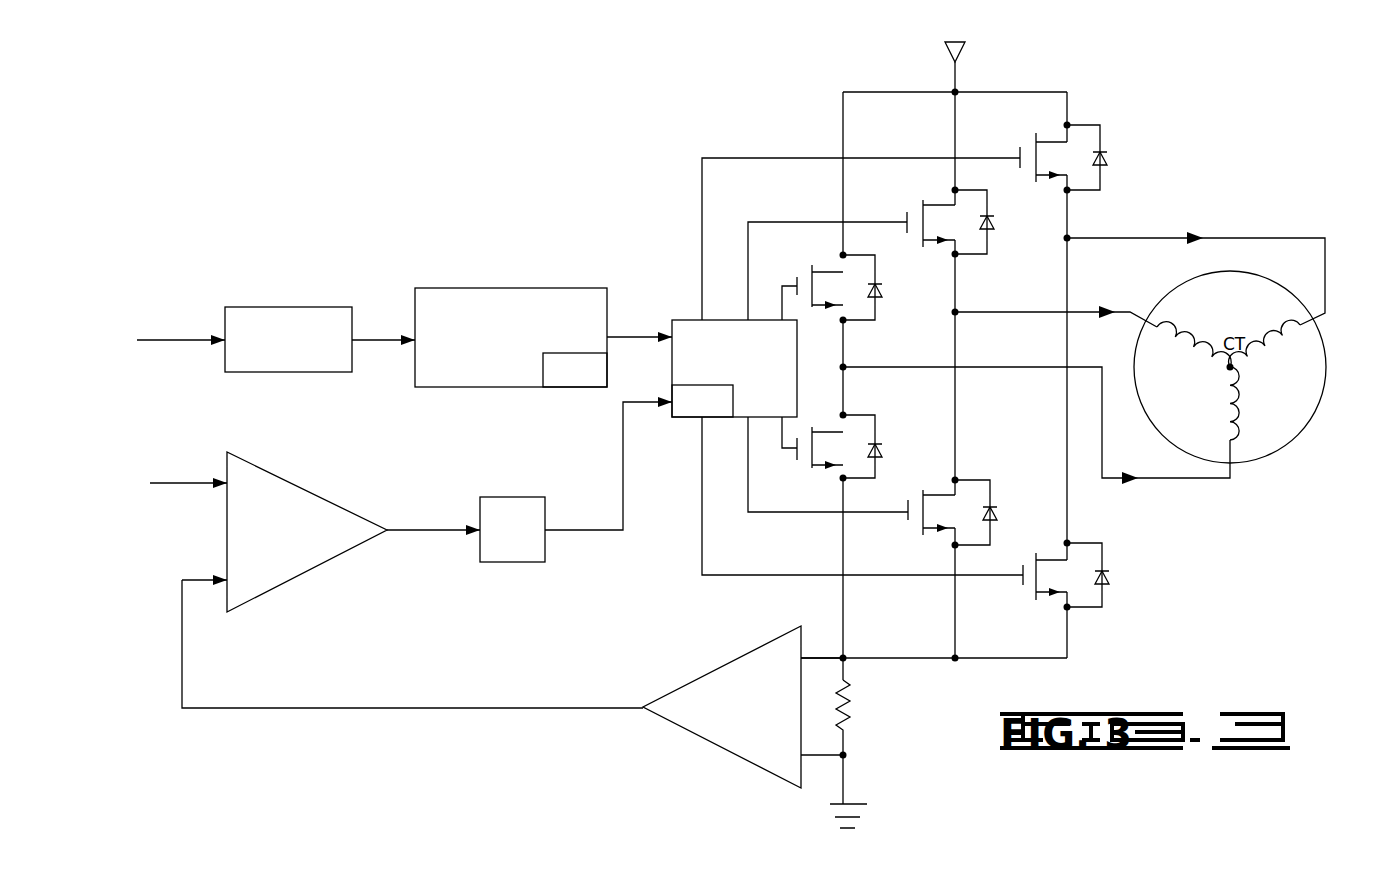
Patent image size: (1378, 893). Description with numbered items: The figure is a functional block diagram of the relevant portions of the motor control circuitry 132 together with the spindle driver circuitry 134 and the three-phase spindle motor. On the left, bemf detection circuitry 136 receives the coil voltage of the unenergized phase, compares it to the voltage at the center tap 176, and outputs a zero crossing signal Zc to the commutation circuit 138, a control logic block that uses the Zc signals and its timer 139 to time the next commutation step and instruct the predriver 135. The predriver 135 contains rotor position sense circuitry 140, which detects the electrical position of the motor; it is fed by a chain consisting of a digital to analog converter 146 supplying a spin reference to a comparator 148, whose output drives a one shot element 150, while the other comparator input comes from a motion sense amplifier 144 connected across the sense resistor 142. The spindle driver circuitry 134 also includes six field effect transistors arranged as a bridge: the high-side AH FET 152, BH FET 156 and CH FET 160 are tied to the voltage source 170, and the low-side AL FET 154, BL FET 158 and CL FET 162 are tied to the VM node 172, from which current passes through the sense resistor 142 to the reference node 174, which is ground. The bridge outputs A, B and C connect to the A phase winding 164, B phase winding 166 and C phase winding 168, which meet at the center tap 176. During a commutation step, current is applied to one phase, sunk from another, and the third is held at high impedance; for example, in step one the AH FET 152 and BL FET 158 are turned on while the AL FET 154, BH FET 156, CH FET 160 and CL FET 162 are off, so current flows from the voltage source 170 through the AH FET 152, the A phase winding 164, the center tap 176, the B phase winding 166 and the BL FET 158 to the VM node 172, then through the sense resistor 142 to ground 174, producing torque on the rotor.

The motor control circuitry 132 is at (383, 222).
The spindle driver circuitry 134 is at (762, 122).
The predriver 135 is at (685, 320).
The bemf detection circuitry 136 is at (265, 307).
The commutation circuit 138 is at (480, 288).
The timer 139 is at (565, 387).
The rotor position sense circuitry 140 is at (690, 417).
The sense resistor 142 is at (855, 720).
The motion sense amplifier 144 is at (752, 650).
The digital to analog converter 146 is at (205, 455).
The comparator 148 is at (313, 490).
The one shot element 150 is at (500, 497).
The AH FET 152 is at (1082, 124).
The AL FET 154 is at (1085, 543).
The BH FET 156 is at (973, 256).
The BL FET 158 is at (973, 479).
The CH FET 160 is at (858, 322).
The CL FET 162 is at (858, 415).
The A phase winding 164 is at (1290, 335).
The B phase winding 166 is at (1168, 337).
The C phase winding 168 is at (1236, 433).
The voltage source 170 is at (963, 52).
The VM node 172 is at (843, 645).
The reference node 174 is at (860, 803).
The center tap 176 is at (1232, 369).